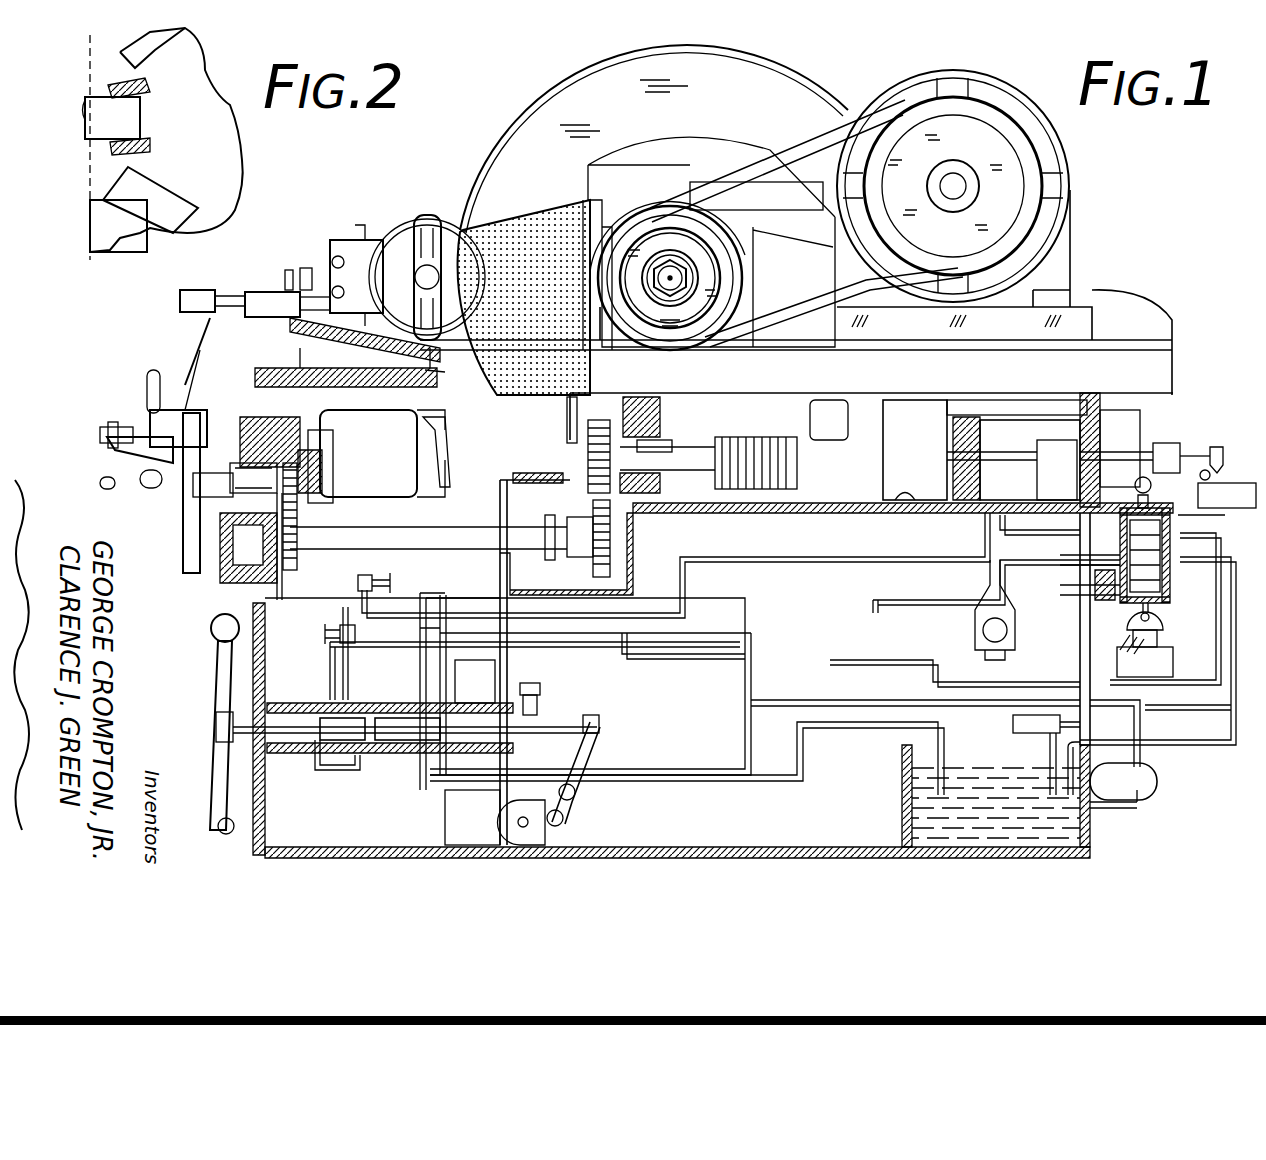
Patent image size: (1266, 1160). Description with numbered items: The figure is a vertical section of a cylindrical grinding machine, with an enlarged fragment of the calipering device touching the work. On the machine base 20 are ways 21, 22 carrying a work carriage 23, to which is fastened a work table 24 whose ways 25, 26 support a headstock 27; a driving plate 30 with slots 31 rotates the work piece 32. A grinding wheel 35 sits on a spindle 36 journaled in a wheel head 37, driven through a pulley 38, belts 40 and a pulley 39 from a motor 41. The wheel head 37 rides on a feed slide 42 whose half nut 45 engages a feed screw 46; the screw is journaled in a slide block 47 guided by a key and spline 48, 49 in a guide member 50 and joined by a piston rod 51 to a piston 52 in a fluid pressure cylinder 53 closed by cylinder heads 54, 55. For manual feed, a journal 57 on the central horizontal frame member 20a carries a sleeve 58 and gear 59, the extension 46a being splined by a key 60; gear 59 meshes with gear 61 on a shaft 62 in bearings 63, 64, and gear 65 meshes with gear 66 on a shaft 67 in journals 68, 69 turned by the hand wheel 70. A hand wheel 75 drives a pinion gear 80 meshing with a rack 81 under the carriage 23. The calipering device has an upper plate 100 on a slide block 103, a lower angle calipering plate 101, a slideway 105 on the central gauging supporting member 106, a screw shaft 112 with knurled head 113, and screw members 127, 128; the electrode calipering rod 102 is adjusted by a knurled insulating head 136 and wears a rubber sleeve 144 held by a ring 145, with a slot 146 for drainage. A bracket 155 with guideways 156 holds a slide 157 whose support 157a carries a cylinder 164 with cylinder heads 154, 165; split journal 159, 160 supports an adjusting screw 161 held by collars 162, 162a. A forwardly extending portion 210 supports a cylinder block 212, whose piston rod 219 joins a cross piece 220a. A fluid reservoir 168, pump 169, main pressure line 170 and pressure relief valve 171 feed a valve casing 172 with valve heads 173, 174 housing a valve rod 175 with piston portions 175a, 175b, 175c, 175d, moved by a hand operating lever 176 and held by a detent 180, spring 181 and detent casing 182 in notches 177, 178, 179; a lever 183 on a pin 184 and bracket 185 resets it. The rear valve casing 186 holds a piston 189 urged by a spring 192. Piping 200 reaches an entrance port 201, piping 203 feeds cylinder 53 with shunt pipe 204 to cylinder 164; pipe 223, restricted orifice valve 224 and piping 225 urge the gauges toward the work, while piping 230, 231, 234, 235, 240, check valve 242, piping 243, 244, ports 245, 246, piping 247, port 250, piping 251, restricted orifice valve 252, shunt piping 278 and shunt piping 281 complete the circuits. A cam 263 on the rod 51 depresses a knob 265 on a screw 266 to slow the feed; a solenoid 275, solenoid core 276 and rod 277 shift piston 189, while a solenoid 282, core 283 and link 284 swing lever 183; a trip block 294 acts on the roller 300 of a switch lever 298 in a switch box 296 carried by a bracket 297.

In FIG. 1, the machine base 20 is at (785, 858).
In FIG. 1, the central horizontal frame member 20a is at (836, 619).
In FIG. 1, the way 21 is at (260, 429).
In FIG. 1, the way 22 is at (452, 445).
In FIG. 1, the work carriage 23 is at (368, 453).
In FIG. 1, the work table 24 is at (346, 367).
In FIG. 1, the way 25 is at (348, 340).
In FIG. 1, the way 26 is at (454, 385).
In FIG. 1, the headstock 27 is at (333, 262).
In FIG. 1, the driving plate 30 is at (427, 256).
In FIG. 1, the slots 31 is at (443, 265).
In FIG. 2, the work piece 32 is at (218, 135).
In FIG. 1, the work piece 32 is at (645, 139).
In FIG. 1, the grinding wheel 35 is at (532, 215).
In FIG. 1, the spindle 36 is at (665, 275).
In FIG. 1, the wheel head 37 is at (742, 245).
In FIG. 1, the pulley 38 is at (730, 275).
In FIG. 1, the pulley 39 is at (920, 115).
In FIG. 1, the belts 40 is at (795, 155).
In FIG. 1, the motor 41 is at (995, 90).
In FIG. 1, the feed slide 42 is at (1172, 354).
In FIG. 1, the half nut 45 is at (828, 400).
In FIG. 1, the feed screw 46 is at (756, 449).
In FIG. 1, the extension of the screw shaft 46a is at (700, 455).
In FIG. 1, the slide block 47 is at (900, 400).
In FIG. 1, the key 48 is at (904, 479).
In FIG. 1, the spline 49 is at (855, 513).
In FIG. 1, the guide member 50 is at (950, 400).
In FIG. 1, the piston rod 51 is at (1050, 455).
In FIG. 1, the piston 52 is at (1037, 486).
In FIG. 1, the fluid pressure cylinder 53 is at (1020, 400).
In FIG. 1, the cylinder head 54 is at (953, 447).
In FIG. 1, the cylinder head 55 is at (1095, 393).
In FIG. 1, the journal 57 is at (645, 400).
In FIG. 1, the sleeve 58 is at (660, 483).
In FIG. 1, the gear 59 is at (603, 444).
In FIG. 1, the key 60 is at (672, 447).
In FIG. 1, the gear 61 is at (612, 565).
In FIG. 1, the shaft 62 is at (423, 466).
In FIG. 1, the bearing 63 is at (550, 560).
In FIG. 1, the bearing 64 is at (228, 575).
In FIG. 1, the gear 65 is at (283, 580).
In FIG. 1, the gear 66 is at (322, 470).
In FIG. 1, the shaft 67 is at (200, 495).
In FIG. 1, the journal 68 is at (215, 515).
In FIG. 1, the journal 69 is at (253, 480).
In FIG. 1, the hand wheel 70 is at (183, 545).
In FIG. 1, the table positioning hand wheel 75 is at (112, 500).
In FIG. 1, the pinion gear 80 is at (320, 513).
In FIG. 1, the rack 81 is at (325, 450).
In FIG. 2, the upper plate 100 is at (190, 42).
In FIG. 1, the upper plate 100 is at (370, 240).
In FIG. 2, the lower angle calipering plate 101 is at (110, 222).
In FIG. 1, the lower angle calipering plate 101 is at (400, 313).
In FIG. 2, the electrode calipering rod 102 is at (88, 140).
In FIG. 1, the slide block 103 is at (340, 240).
In FIG. 1, the vertical slideway 105 is at (332, 245).
In FIG. 2, the central gauging supporting member 106 is at (90, 188).
In FIG. 1, the central gauging supporting member 106 is at (320, 248).
In FIG. 1, the screw shaft 112 is at (350, 240).
In FIG. 1, the knurled head 113 is at (360, 240).
In FIG. 1, the screw member 127 is at (359, 258).
In FIG. 1, the screw member 128 is at (359, 297).
In FIG. 1, the knurled insulating head 136 is at (291, 266).
In FIG. 2, the rubber sleeve 144 is at (150, 88).
In FIG. 2, the ring 145 is at (133, 172).
In FIG. 2, the slot 146 is at (150, 145).
In FIG. 1, the cylinder head 154 is at (269, 274).
In FIG. 1, the bracket 155 is at (110, 450).
In FIG. 1, the horizontal guideways 156 is at (147, 405).
In FIG. 1, the slide 157 is at (180, 398).
In FIG. 1, the support 157a is at (175, 351).
In FIG. 1, the split journal 159 is at (120, 428).
In FIG. 1, the split journal 160 is at (107, 445).
In FIG. 1, the adjusting screw 161 is at (100, 434).
In FIG. 1, the collar 162 is at (95, 432).
In FIG. 1, the collar 162a is at (115, 428).
In FIG. 1, the cylinder 164 is at (240, 292).
In FIG. 1, the cylinder head 165 is at (205, 292).
In FIG. 1, the fluid reservoir 168 is at (903, 822).
In FIG. 1, the pump 169 is at (1152, 790).
In FIG. 1, the main pressure line 170 is at (991, 724).
In FIG. 1, the pressure relief valve 171 is at (1013, 725).
In FIG. 1, the valve casing 172 is at (275, 690).
In FIG. 1, the valve head 173 is at (472, 817).
In FIG. 1, the valve head 174 is at (235, 775).
In FIG. 1, the valve rod 175 is at (195, 735).
In FIG. 1, the piston portion 175a is at (390, 694).
In FIG. 1, the piston portion 175b is at (390, 760).
In FIG. 1, the piston portion 175c is at (475, 681).
In FIG. 1, the piston portion 175d is at (481, 687).
In FIG. 1, the hand operating lever 176 is at (215, 768).
In FIG. 1, the notch 177 is at (550, 748).
In FIG. 1, the notch 178 is at (590, 722).
In FIG. 1, the notch 179 is at (600, 725).
In FIG. 1, the detent 180 is at (537, 710).
In FIG. 1, the spring 181 is at (540, 690).
In FIG. 1, the detent casing 182 is at (530, 683).
In FIG. 1, the lever 183 is at (580, 755).
In FIG. 1, the pin 184 is at (577, 795).
In FIG. 1, the bracket 185 is at (580, 830).
In FIG. 1, the valve casing 186 is at (1125, 555).
In FIG. 1, the piston 189 is at (1165, 545).
In FIG. 1, the spring 192 is at (1105, 600).
In FIG. 1, the piping 200 is at (531, 770).
In FIG. 1, the entrance port 201 is at (407, 732).
In FIG. 1, the piping 203 is at (743, 604).
In FIG. 1, the shunt pipe 204 is at (676, 568).
In FIG. 1, the forwardly extending portion 210 is at (210, 315).
In FIG. 1, the cylinder block 212 is at (180, 300).
In FIG. 1, the piston rod 219 is at (210, 290).
In FIG. 1, the cross piece 220a is at (245, 365).
In FIG. 1, the pipe 223 is at (567, 663).
In FIG. 1, the restricted orifice valve 224 is at (388, 580).
In FIG. 1, the piping 225 is at (428, 538).
In FIG. 1, the piping 230 is at (647, 681).
In FIG. 1, the piping 231 is at (1065, 557).
In FIG. 1, the piping 234 is at (1237, 765).
In FIG. 1, the piping 235 is at (768, 728).
In FIG. 1, the piping 240 is at (963, 592).
In FIG. 1, the check valve 242 is at (975, 617).
In FIG. 1, the piping 243 is at (1010, 660).
In FIG. 1, the piping 244 is at (975, 639).
In FIG. 1, the port 245 is at (363, 654).
In FIG. 1, the port 246 is at (319, 766).
In FIG. 1, the piping 247 is at (303, 805).
In FIG. 1, the port 250 is at (342, 729).
In FIG. 1, the piping 251 is at (350, 577).
In FIG. 1, the restricted orifice valve 252 is at (320, 625).
In FIG. 1, the cam 263 is at (1172, 443).
In FIG. 1, the knob 265 is at (1123, 492).
In FIG. 1, the screw 266 is at (1148, 495).
In FIG. 1, the solenoid 275 is at (1160, 660).
In FIG. 1, the solenoid core 276 is at (1160, 632).
In FIG. 1, the rod 277 is at (1160, 612).
In FIG. 1, the shunt piping 278 is at (1190, 590).
In FIG. 1, the shunt piping 281 is at (1065, 590).
In FIG. 1, the solenoid 282 is at (398, 840).
In FIG. 1, the core 283 is at (470, 858).
In FIG. 1, the link 284 is at (550, 858).
In FIG. 1, the trip block 294 is at (1237, 451).
In FIG. 1, the switch box 296 is at (1233, 466).
In FIG. 1, the bracket 297 is at (1218, 527).
In FIG. 1, the switch lever 298 is at (1227, 497).
In FIG. 1, the roller 300 is at (1205, 456).